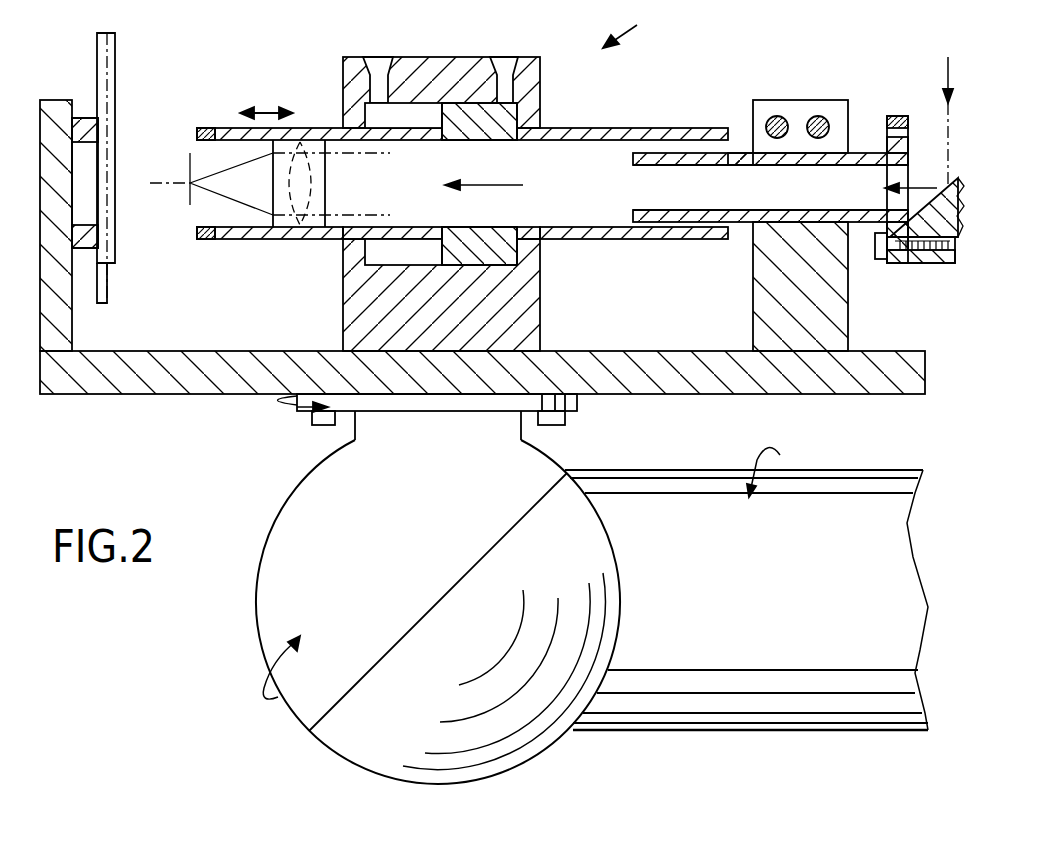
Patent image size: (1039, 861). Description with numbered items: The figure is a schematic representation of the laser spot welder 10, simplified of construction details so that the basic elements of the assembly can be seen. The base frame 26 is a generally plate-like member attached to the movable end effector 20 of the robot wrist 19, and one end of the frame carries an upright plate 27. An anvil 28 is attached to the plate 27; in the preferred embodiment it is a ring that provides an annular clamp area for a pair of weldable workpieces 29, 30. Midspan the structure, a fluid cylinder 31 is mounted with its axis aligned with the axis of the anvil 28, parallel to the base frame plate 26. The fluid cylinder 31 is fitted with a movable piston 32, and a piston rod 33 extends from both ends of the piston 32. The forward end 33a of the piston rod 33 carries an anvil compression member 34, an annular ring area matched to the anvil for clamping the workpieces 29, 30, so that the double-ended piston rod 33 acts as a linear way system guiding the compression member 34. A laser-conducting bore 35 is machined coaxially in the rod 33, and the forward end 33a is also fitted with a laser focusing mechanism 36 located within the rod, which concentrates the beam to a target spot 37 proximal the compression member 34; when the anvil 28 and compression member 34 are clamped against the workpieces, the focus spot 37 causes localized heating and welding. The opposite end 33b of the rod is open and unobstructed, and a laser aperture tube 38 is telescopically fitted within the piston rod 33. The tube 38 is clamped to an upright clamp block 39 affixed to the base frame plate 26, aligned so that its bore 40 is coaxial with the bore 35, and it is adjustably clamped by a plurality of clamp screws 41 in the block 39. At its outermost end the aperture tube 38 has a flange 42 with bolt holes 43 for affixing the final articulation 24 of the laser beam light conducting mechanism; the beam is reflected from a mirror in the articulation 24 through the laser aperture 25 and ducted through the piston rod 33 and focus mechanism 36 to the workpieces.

The laser spot welder 10 is at (635, 34).
The robot wrist 19 is at (353, 563).
The movable end effector 20 is at (303, 411).
The final articulation 24 is at (928, 263).
The laser aperture 25 is at (800, 165).
The base frame 26 is at (686, 396).
The upright plate 27 is at (40, 347).
The anvil 28 is at (89, 118).
The weldable workpiece 29 is at (110, 303).
The weldable workpiece 30 is at (118, 247).
The fluid cylinder 31 is at (540, 289).
The movable piston 32 is at (441, 116).
The piston rod 33 is at (622, 128).
The forward end of piston rod 33a is at (256, 239).
The opposite end of piston rod 33b is at (628, 240).
The anvil compression member 34 is at (197, 128).
The laser-conducting bore 35 is at (514, 142).
The laser focusing mechanism 36 is at (328, 195).
The target spot 37 is at (190, 184).
The laser aperture tube 38 is at (737, 153).
The upright clamp block 39 is at (848, 327).
The bore 40 is at (786, 218).
The clamp screws 41 is at (779, 116).
The flange 42 is at (898, 116).
The bolt holes 43 is at (890, 143).